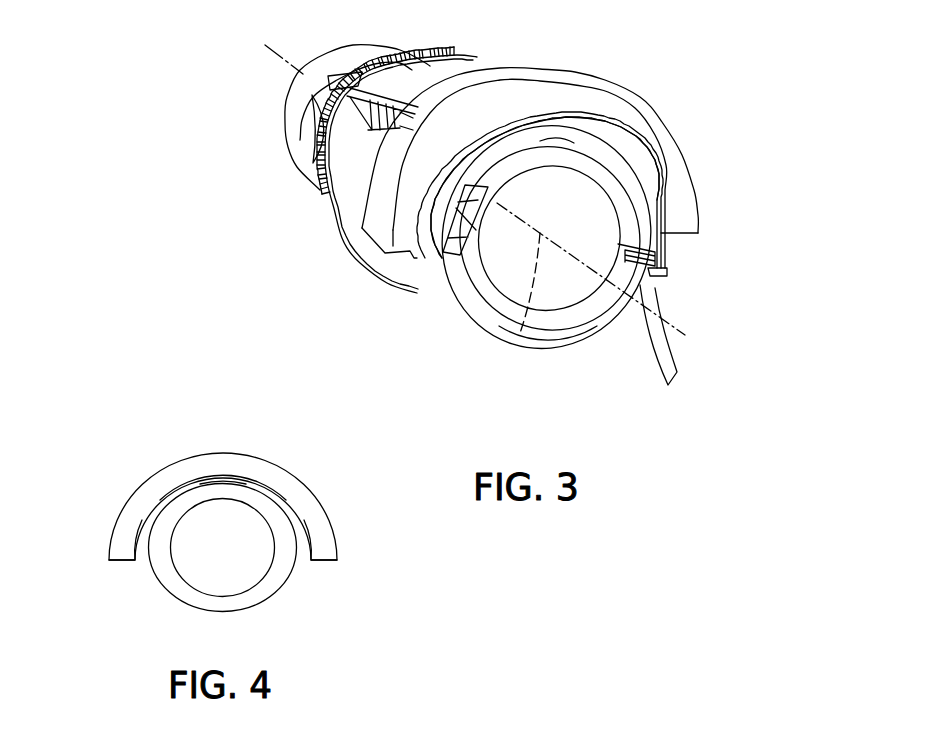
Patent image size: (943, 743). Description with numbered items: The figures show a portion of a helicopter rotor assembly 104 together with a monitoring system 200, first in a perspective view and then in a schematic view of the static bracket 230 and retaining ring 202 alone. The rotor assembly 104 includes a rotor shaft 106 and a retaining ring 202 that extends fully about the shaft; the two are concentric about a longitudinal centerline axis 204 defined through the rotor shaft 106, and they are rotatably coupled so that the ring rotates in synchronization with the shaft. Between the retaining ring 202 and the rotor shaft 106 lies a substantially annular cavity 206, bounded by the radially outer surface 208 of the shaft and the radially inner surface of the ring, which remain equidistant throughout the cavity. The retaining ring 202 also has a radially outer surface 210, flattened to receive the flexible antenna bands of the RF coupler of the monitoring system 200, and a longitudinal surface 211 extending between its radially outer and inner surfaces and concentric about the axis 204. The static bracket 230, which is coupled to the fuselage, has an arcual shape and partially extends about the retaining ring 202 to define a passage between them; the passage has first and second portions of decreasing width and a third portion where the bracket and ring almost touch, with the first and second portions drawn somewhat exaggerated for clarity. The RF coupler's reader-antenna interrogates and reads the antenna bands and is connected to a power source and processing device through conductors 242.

In FIG. 3, the rotor assembly 104 is at (337, 238).
In FIG. 4, the rotor assembly 104 is at (159, 455).
In FIG. 3, the rotor shaft 106 is at (563, 317).
In FIG. 3, the monitoring system 200 is at (661, 293).
In FIG. 3, the retaining ring 202 is at (463, 338).
In FIG. 4, the retaining ring 202 is at (220, 609).
In FIG. 3, the longitudinal centerline axis 204 is at (540, 343).
In FIG. 3, the annular cavity 206 is at (540, 343).
In FIG. 3, the radially outer surface 208 is at (557, 327).
In FIG. 3, the radially outer surface 210 is at (619, 121).
In FIG. 3, the longitudinal surface 211 is at (623, 150).
In FIG. 3, the static bracket 230 is at (677, 175).
In FIG. 4, the static bracket 230 is at (270, 477).
In FIG. 3, the conductors 242 is at (673, 356).